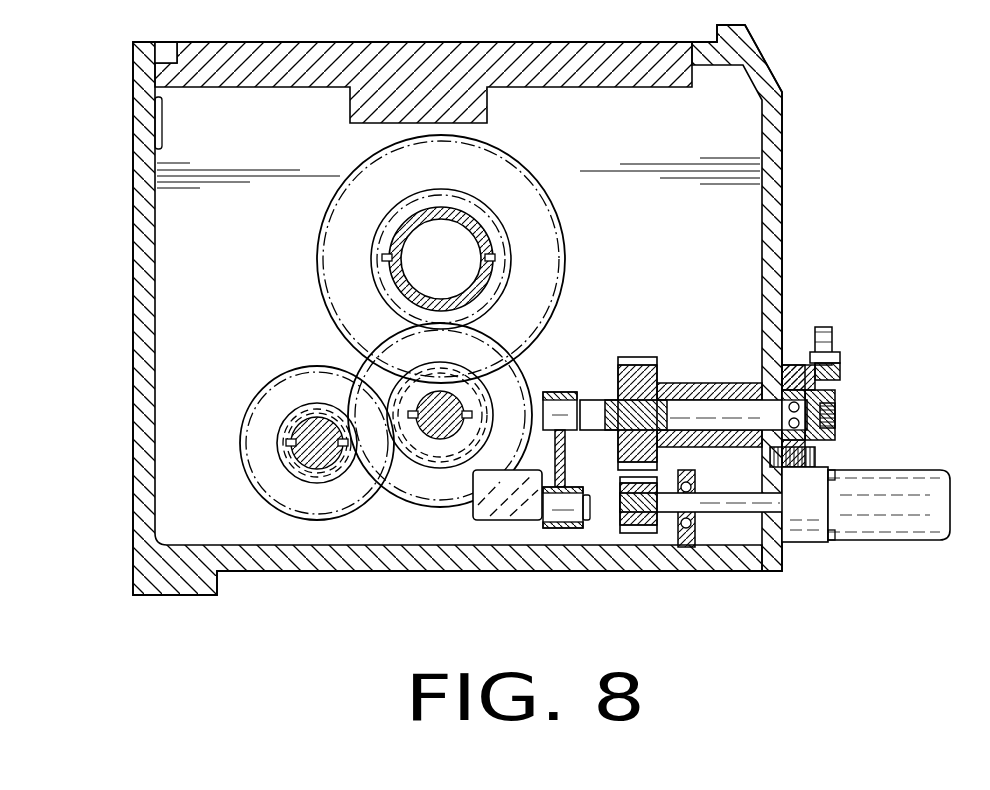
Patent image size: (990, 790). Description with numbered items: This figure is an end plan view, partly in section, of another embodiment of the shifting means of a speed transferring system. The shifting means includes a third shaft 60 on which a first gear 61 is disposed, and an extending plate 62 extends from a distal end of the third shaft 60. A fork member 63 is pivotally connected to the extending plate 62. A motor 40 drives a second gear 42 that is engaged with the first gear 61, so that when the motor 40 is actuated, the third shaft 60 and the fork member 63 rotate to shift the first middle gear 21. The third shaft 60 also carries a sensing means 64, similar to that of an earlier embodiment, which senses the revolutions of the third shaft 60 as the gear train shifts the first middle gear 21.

The first middle gear 21 is at (407, 508).
The motor 40 is at (905, 485).
The second gear 42 is at (642, 533).
The third shaft 60 is at (700, 410).
The first gear 61 is at (636, 360).
The extending plate 62 is at (565, 455).
The fork member 63 is at (533, 510).
The sensing means 64 is at (852, 362).